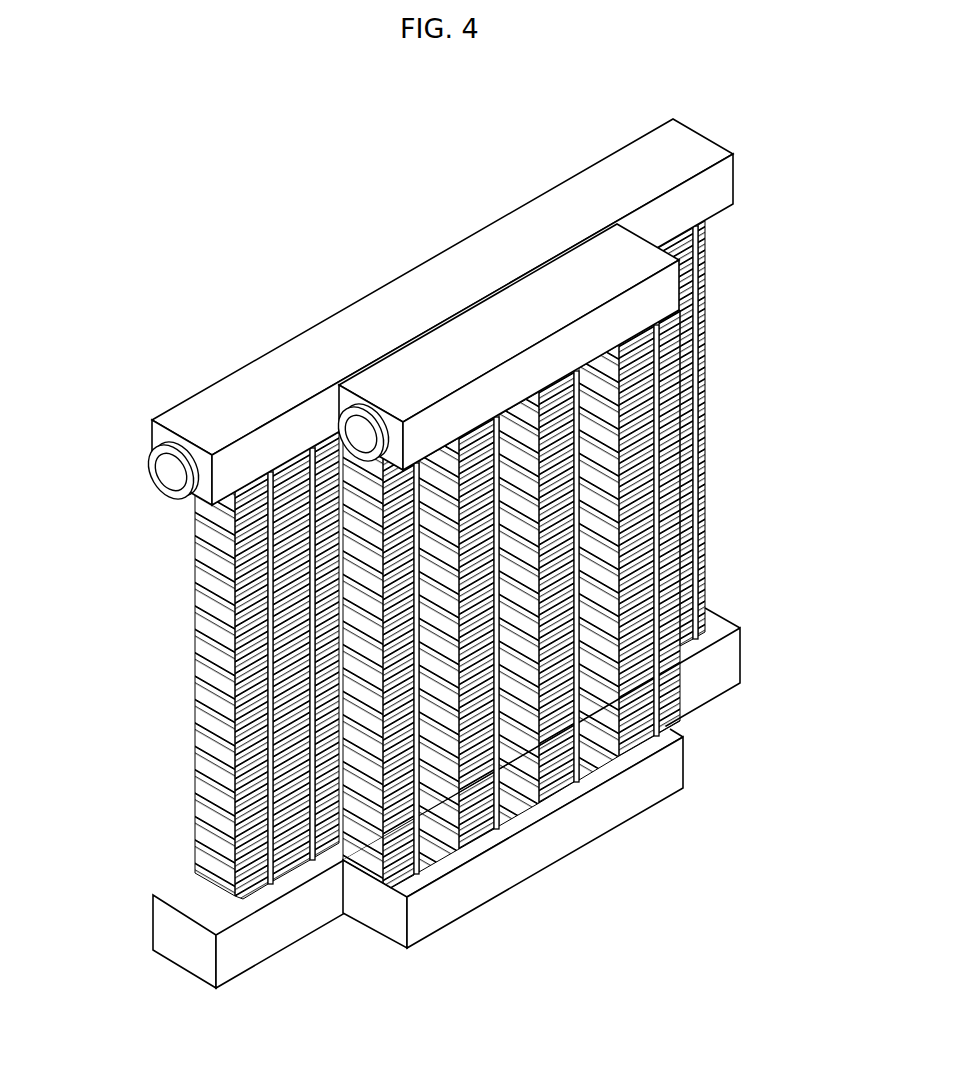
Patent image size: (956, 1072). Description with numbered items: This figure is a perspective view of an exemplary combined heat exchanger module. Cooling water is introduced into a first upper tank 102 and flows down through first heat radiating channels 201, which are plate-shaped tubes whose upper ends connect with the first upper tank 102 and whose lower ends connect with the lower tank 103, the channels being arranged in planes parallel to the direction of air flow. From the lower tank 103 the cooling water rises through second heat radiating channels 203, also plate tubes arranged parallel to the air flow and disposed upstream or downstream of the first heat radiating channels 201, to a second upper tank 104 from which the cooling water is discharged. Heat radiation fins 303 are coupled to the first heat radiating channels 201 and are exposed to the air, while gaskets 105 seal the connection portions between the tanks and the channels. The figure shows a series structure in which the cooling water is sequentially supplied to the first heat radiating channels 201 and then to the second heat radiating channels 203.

The first upper tank 102 is at (480, 246).
The second upper tank 104 is at (442, 350).
The lower tank 103 is at (545, 858).
The gaskets 105 is at (610, 760).
The first heat radiating channels 201 is at (272, 887).
The second heat radiating channels 203 is at (683, 743).
The heat radiation fins 303 is at (197, 751).